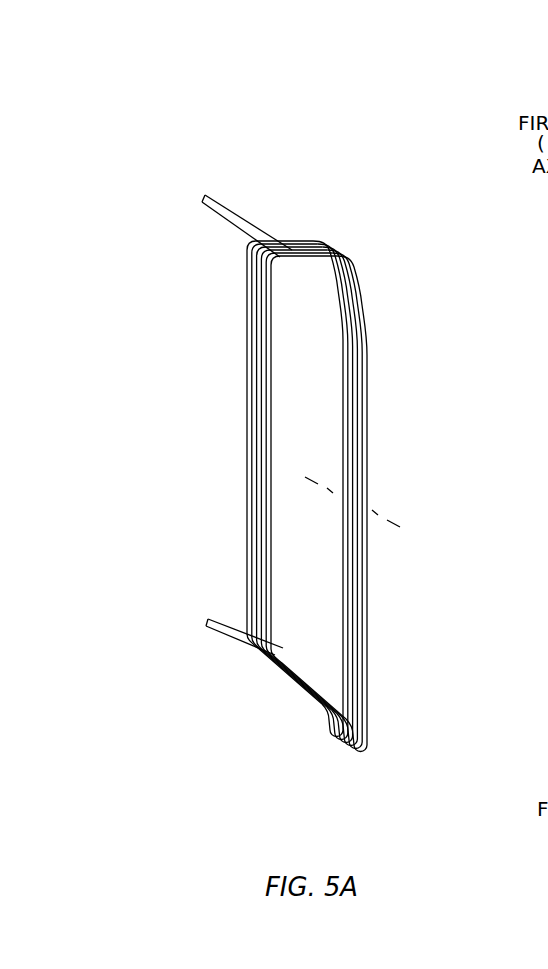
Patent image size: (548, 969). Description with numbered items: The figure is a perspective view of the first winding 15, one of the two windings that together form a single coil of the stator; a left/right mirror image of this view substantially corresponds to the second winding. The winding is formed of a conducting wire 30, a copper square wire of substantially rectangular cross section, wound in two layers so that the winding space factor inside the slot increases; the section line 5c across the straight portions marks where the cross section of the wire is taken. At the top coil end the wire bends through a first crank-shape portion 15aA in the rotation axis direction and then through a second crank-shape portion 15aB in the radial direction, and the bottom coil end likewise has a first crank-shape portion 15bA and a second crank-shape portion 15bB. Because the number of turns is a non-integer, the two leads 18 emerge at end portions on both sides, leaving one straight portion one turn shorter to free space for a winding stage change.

The first winding 15 is at (291, 496).
The lead 18 is at (213, 207).
The conducting wire 30 is at (248, 462).
The first crank-shape portion 15aA is at (307, 263).
The second crank-shape portion 15aB is at (397, 233).
The first crank-shape portion 15bA is at (221, 699).
The second crank-shape portion 15bB is at (325, 728).
The section line 5c is at (313, 488).